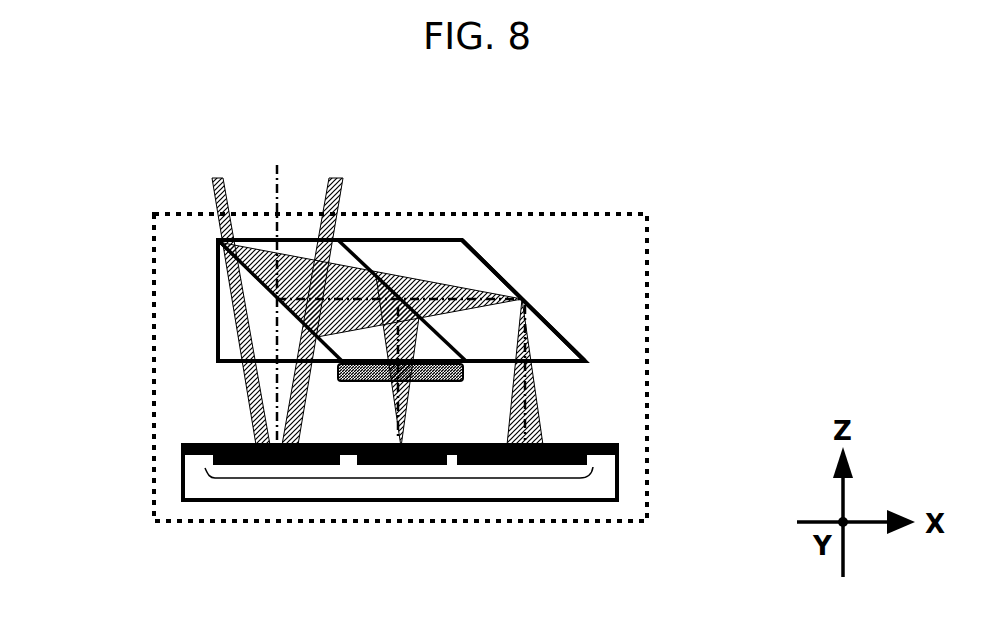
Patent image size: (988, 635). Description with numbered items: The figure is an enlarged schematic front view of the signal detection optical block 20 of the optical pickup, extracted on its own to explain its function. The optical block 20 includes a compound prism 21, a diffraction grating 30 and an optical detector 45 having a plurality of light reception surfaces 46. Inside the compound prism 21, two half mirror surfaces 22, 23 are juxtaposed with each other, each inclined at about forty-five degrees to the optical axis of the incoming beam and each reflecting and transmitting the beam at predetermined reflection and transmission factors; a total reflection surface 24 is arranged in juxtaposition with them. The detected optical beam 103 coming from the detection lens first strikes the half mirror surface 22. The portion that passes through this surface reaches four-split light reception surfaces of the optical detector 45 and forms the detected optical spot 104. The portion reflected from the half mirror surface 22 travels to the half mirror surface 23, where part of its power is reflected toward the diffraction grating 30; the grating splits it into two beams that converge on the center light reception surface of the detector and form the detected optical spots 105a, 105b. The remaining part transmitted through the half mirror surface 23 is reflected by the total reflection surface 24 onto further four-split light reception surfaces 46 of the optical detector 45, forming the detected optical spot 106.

The signal detection optical block 20 is at (648, 259).
The compound prism 21 is at (216, 322).
The half mirror surface 22 is at (252, 283).
The half mirror surface 23 is at (366, 268).
The total reflection surface 24 is at (498, 278).
The diffraction grating 30 is at (464, 371).
The optical detector 45 is at (618, 470).
The light reception surfaces 46 is at (400, 482).
The detected optical beam 103 is at (248, 182).
The detected optical spot 104 is at (257, 440).
The detected optical spot 105a is at (414, 445).
The detected optical spot 105b is at (402, 460).
The detected optical spot 106 is at (547, 445).